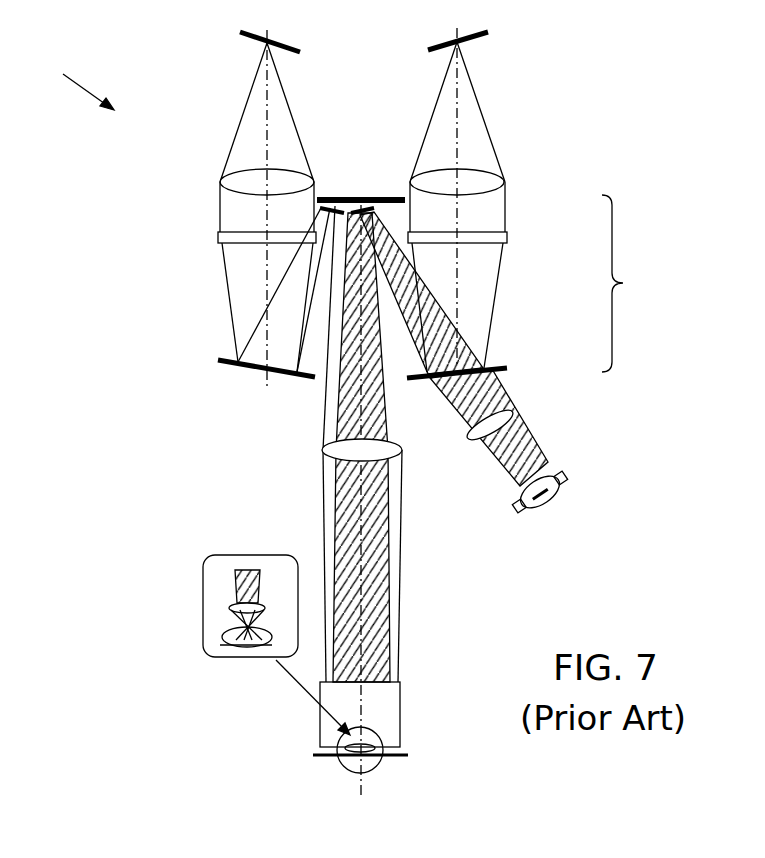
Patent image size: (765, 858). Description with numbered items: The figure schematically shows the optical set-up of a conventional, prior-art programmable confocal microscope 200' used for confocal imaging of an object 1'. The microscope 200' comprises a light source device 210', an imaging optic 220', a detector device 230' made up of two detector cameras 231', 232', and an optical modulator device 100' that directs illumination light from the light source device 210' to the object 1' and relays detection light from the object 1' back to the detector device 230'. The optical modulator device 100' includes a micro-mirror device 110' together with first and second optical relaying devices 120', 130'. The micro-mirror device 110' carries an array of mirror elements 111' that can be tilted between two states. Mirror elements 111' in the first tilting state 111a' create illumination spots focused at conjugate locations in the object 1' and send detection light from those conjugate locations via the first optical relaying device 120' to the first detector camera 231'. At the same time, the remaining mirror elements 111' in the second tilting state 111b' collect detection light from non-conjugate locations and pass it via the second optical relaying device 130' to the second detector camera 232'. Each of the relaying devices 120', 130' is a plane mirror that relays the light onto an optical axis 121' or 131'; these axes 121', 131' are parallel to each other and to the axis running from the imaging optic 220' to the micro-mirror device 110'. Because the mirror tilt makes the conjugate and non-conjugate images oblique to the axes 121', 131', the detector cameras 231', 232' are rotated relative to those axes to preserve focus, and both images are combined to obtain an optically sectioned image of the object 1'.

The programmable confocal microscope 200' is at (73, 71).
The optical modulator device 100' is at (645, 283).
The micro-mirror device 110' is at (362, 183).
The mirror elements 111' is at (453, 231).
The first tilting state 111a' is at (378, 174).
The second tilting state 111b' is at (335, 159).
The first optical relaying device 120' is at (503, 347).
The optical axis 121' is at (488, 207).
The second optical relaying device 130' is at (222, 344).
The optical axis 131' is at (245, 207).
The light source device 210' is at (586, 466).
The imaging optic 220' is at (399, 727).
The detector device 230' is at (416, 32).
The first detector camera 231' is at (510, 25).
The second detector camera 232' is at (316, 28).
The object 1' is at (255, 645).